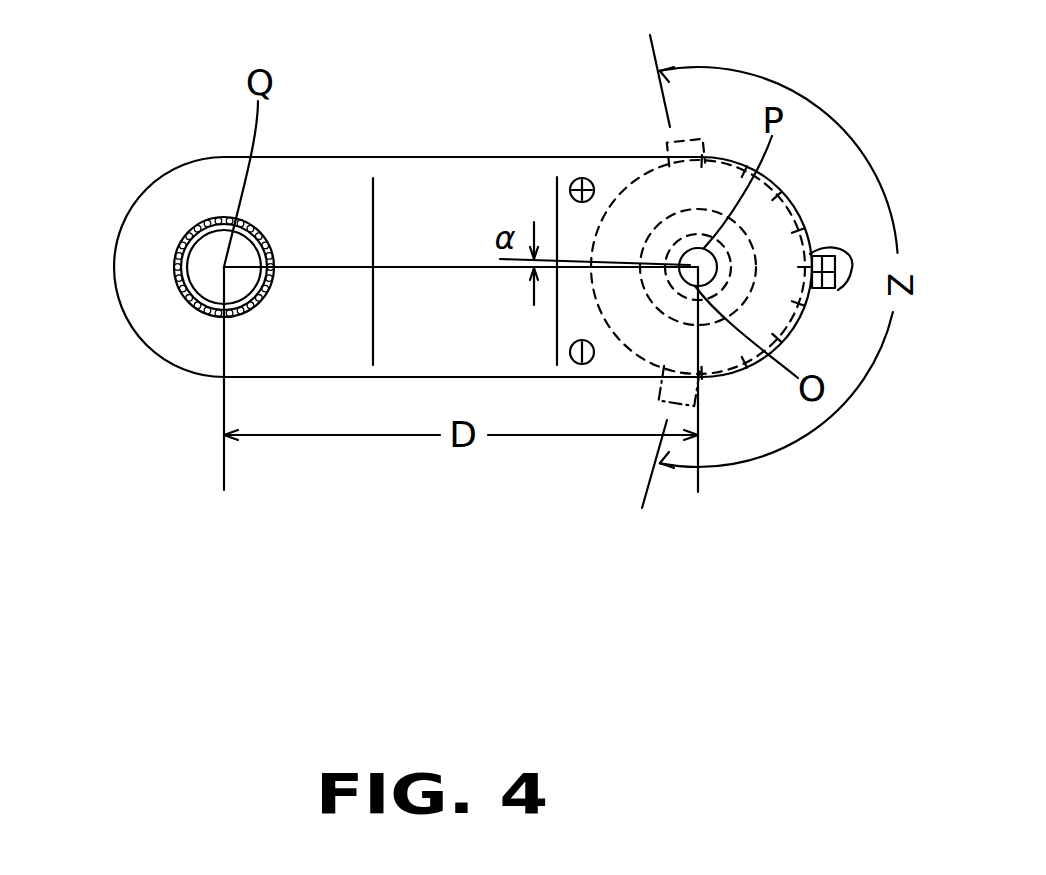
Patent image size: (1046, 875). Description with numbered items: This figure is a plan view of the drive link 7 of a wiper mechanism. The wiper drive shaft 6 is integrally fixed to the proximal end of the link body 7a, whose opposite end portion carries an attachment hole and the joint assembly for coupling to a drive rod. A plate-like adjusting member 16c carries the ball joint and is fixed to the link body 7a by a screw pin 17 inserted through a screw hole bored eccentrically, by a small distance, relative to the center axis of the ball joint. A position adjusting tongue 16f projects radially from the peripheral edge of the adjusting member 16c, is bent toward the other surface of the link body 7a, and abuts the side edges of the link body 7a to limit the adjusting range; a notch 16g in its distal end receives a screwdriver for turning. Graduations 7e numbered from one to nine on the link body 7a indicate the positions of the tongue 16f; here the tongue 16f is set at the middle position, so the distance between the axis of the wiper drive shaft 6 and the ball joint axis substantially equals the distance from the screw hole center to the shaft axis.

The wiper drive shaft 6 is at (208, 260).
The drive link 7 is at (460, 480).
The link body 7a is at (425, 192).
The graduations 7e is at (670, 193).
The adjusting member 16c is at (757, 372).
The position adjusting tongue 16f is at (838, 293).
The notch 16g is at (850, 255).
The screw pin 17 is at (688, 285).